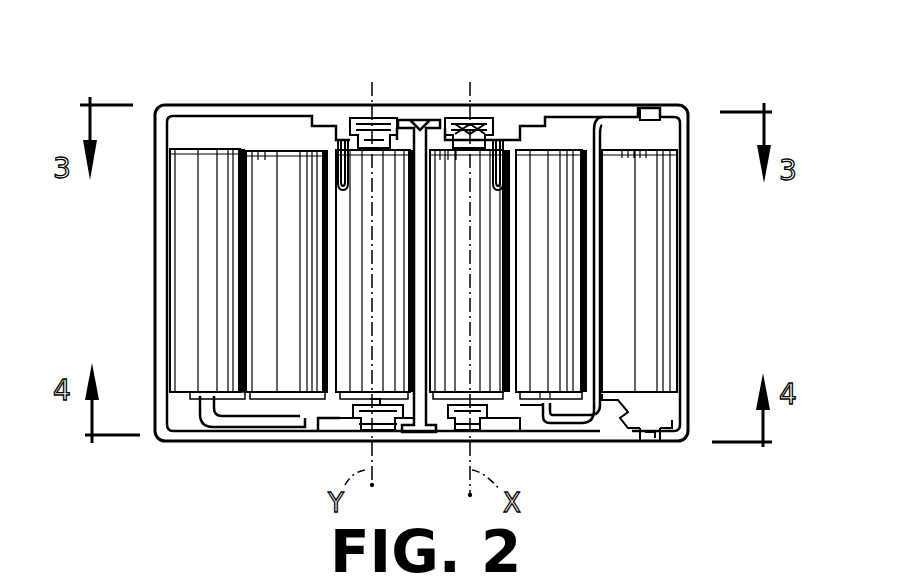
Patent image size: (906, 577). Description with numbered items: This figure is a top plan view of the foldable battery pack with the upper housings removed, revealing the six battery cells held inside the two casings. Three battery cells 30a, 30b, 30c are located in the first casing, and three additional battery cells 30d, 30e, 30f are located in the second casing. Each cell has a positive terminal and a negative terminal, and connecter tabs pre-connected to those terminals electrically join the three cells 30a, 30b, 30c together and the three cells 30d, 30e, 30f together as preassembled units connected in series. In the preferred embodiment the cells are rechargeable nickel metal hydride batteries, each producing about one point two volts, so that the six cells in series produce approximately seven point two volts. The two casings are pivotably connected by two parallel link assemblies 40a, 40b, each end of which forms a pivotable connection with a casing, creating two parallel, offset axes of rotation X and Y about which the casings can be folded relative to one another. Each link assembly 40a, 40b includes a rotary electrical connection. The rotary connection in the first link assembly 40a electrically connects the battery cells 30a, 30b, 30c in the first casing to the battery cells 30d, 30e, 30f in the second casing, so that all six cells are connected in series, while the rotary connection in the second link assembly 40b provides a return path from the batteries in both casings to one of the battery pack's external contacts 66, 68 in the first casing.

The battery cell 30a is at (661, 252).
The battery cell 30b is at (570, 252).
The battery cell 30c is at (486, 252).
The battery cell 30d is at (388, 252).
The battery cell 30e is at (304, 252).
The battery cell 30f is at (221, 252).
The link assembly 40a is at (418, 106).
The link assembly 40b is at (425, 445).
The external contact 66 is at (648, 444).
The external contact 68 is at (644, 106).